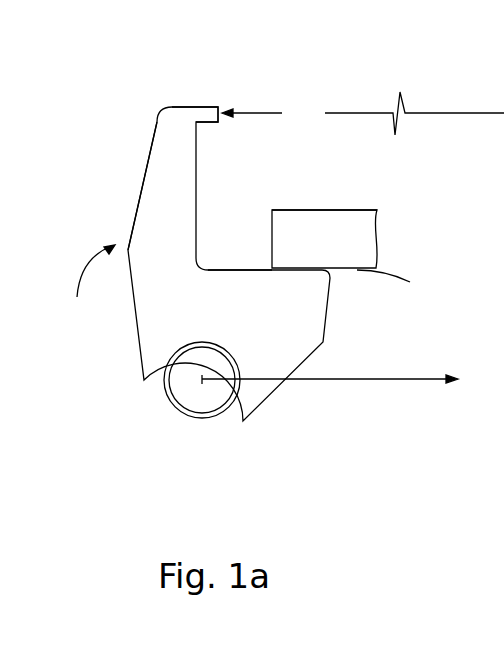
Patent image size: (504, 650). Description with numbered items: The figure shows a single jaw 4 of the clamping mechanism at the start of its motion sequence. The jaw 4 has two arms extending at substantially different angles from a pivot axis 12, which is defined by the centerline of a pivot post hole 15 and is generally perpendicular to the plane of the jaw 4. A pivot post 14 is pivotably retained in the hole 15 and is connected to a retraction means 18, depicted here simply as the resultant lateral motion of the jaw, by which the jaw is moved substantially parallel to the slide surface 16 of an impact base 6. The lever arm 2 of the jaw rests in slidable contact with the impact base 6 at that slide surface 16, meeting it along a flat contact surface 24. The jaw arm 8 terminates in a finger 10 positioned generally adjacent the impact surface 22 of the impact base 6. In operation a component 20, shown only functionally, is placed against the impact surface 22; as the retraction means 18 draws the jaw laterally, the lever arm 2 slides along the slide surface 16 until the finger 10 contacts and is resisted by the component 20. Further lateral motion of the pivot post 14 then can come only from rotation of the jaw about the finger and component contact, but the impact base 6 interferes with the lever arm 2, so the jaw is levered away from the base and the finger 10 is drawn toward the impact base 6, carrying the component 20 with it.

The lever arm 2 is at (330, 297).
The jaw 4 is at (93, 283).
The impact base 6 is at (377, 228).
The jaw arm 8 is at (140, 185).
The finger 10 is at (194, 107).
The pivot axis 12 is at (202, 380).
The pivot post 14 is at (232, 400).
The pivot post hole 15 is at (227, 345).
The slide surface 16 is at (396, 284).
The retraction means 18 is at (345, 389).
The component 20 is at (363, 110).
The impact surface 22 is at (320, 210).
The flat contact surface 24 is at (226, 270).